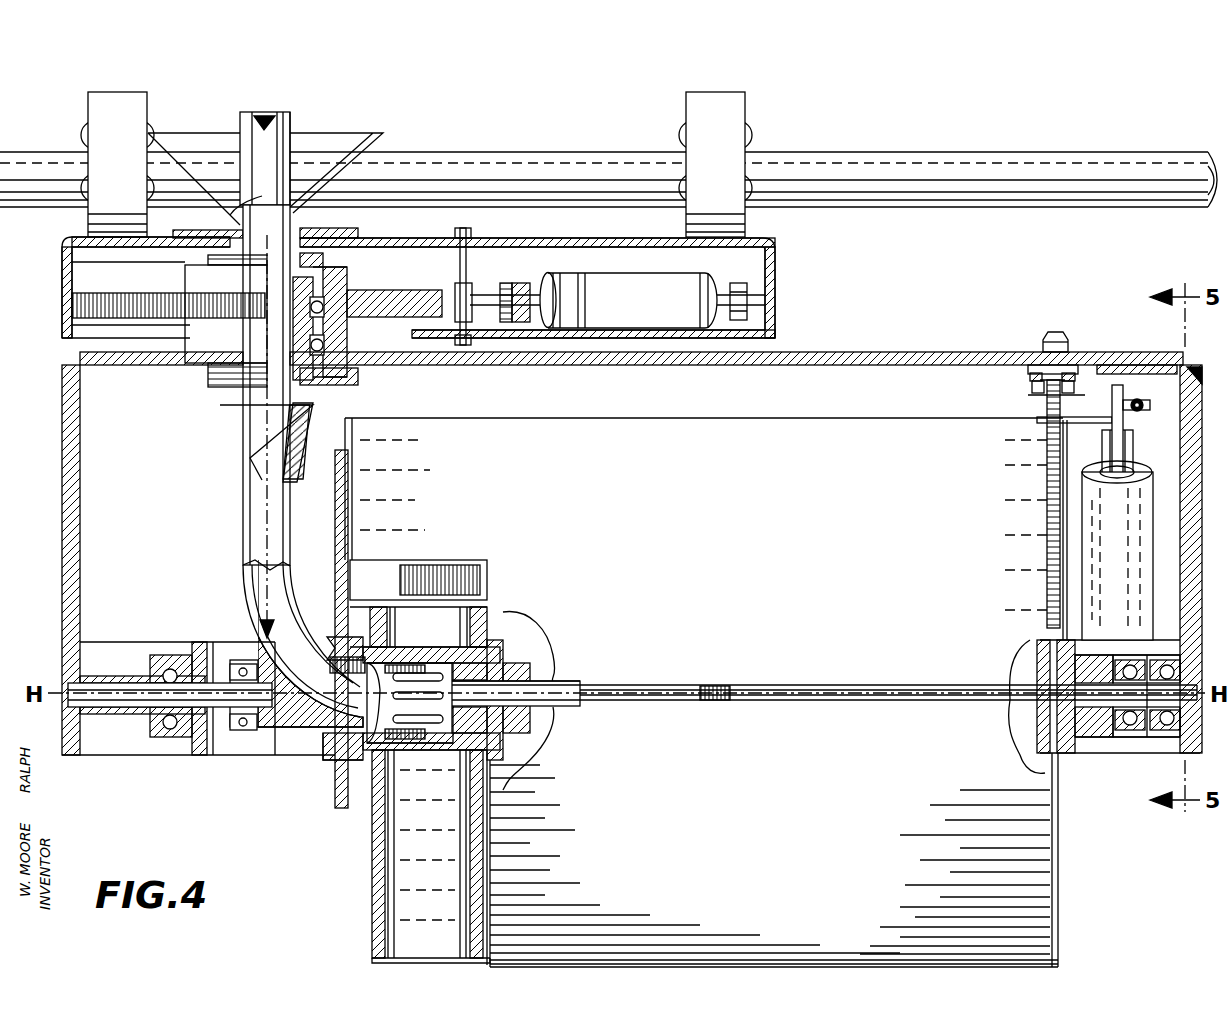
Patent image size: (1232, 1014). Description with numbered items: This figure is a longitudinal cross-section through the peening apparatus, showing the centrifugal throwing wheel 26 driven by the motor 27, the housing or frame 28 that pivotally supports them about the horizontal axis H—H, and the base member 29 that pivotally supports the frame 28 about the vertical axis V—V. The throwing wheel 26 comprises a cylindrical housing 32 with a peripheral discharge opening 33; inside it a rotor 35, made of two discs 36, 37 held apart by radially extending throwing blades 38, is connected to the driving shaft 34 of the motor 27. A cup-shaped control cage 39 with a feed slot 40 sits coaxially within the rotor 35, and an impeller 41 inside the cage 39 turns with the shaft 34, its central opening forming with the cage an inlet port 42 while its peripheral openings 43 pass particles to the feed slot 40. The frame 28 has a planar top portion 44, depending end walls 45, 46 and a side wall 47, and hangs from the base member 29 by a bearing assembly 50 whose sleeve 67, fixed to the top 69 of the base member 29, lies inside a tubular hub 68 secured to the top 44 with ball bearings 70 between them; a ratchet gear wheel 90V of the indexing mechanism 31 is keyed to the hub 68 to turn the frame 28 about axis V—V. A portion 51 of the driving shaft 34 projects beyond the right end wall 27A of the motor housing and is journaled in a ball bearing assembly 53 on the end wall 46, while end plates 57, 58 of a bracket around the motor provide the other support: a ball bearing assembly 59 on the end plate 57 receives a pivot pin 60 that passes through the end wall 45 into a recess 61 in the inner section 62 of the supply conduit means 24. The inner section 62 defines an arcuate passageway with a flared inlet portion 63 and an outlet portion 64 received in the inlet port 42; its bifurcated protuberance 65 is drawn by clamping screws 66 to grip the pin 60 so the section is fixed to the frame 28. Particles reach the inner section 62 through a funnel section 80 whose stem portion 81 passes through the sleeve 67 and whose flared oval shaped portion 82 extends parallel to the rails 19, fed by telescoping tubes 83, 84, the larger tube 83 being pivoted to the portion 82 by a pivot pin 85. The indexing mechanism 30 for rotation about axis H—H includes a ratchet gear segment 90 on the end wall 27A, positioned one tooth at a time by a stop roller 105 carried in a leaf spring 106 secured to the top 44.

The rails 19 is at (522, 158).
The peening particle supply conduit means 24 is at (236, 503).
The centrifugal throwing wheel 26 is at (417, 859).
The motor 27 is at (725, 692).
The right end wall of motor housing 27A is at (1010, 748).
The housing or frame 28 is at (603, 560).
The base member 29 is at (782, 257).
The indexing mechanism 30 is at (1142, 422).
The indexing mechanism 31 is at (584, 260).
The cylindrical housing 32 is at (335, 800).
The peripheral discharge opening 33 is at (420, 600).
The driving shaft 34 is at (558, 683).
The rotor 35 is at (405, 963).
The disc 36 is at (377, 932).
The disc 37 is at (509, 917).
The throwing blades 38 is at (463, 847).
The control cage 39 is at (395, 747).
The feed slot 40 is at (447, 749).
The impeller 41 is at (500, 661).
The inlet port 42 is at (397, 677).
The peripheral openings 43 is at (824, 693).
The planar top portion 44 is at (869, 350).
The end wall 45 is at (67, 595).
The end wall 46 is at (1172, 460).
The side wall 47 is at (177, 701).
The bearing assembly 50 is at (353, 257).
The shaft portion 51 is at (1084, 716).
The ball bearing assembly 53 is at (1117, 550).
The end plate 57 is at (198, 758).
The end plate 58 is at (1066, 755).
The ball bearing assembly 59 is at (162, 745).
The pivot pin 60 is at (68, 704).
The recess 61 is at (218, 747).
The inner section 62 is at (246, 553).
The flared inlet portion 63 is at (232, 420).
The outlet portion 64 is at (358, 705).
The protuberance 65 is at (310, 720).
The clamping screws 66 is at (247, 735).
The sleeve 67 is at (345, 232).
The tubular hub 68 is at (353, 386).
The top of base member 69 is at (525, 238).
The ball bearings 70 is at (349, 294).
The funnel section 80 is at (368, 138).
The stem portion 81 is at (283, 281).
The flared oval shaped portion 82 is at (203, 153).
The tube 83 is at (291, 125).
The tube 84 is at (278, 120).
The pivot pin 85 is at (233, 212).
The ratchet gear segment 90 is at (1045, 462).
The ratchet gear wheel 90V is at (70, 294).
The stop roller 105 is at (1031, 372).
The leaf spring 106 is at (1074, 372).